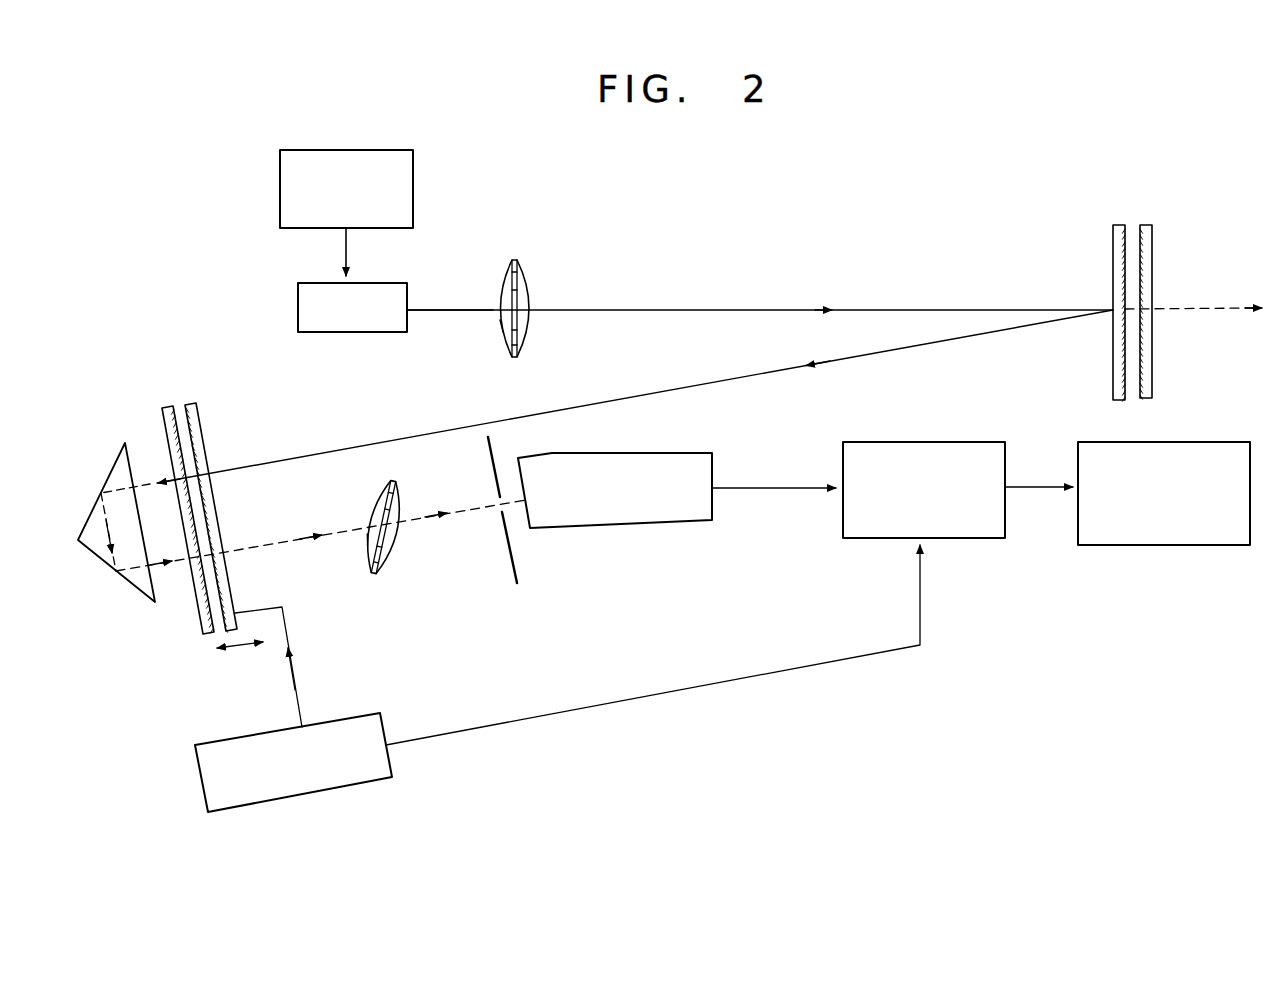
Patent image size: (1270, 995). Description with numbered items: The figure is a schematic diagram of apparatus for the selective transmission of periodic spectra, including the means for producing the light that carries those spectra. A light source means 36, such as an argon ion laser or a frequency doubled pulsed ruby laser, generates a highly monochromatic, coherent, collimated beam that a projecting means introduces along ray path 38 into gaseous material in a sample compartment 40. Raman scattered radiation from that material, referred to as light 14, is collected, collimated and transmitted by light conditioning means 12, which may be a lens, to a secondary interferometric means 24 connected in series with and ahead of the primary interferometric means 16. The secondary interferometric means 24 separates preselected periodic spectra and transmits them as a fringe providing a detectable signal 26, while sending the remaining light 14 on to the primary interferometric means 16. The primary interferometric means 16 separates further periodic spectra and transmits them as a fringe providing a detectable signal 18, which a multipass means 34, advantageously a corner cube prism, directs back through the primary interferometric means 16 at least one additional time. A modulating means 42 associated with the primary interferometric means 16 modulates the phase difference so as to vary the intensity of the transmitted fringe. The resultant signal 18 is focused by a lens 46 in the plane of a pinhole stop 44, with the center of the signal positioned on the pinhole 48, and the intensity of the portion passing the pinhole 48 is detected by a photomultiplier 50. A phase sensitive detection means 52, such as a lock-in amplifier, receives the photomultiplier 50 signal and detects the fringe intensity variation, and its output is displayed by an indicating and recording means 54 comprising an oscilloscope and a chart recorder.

The light conditioning means 12 is at (520, 283).
The light 14 is at (459, 312).
The primary interferometric means 16 is at (165, 407).
The detectable signal 18 is at (153, 482).
The secondary interferometric means 24 is at (1117, 225).
The detectable signal 26 is at (1175, 306).
The multipass means 34 is at (107, 558).
The light source means 36 is at (413, 189).
The ray path 38 is at (347, 247).
The sample compartment 40 is at (323, 332).
The modulating means 42 is at (373, 773).
The pinhole stop 44 is at (512, 570).
The lens 46 is at (373, 535).
The pinhole 48 is at (497, 510).
The photomultiplier 50 is at (652, 523).
The phase sensitive detection means 52 is at (968, 532).
The indicating and recording means 54 is at (1180, 538).